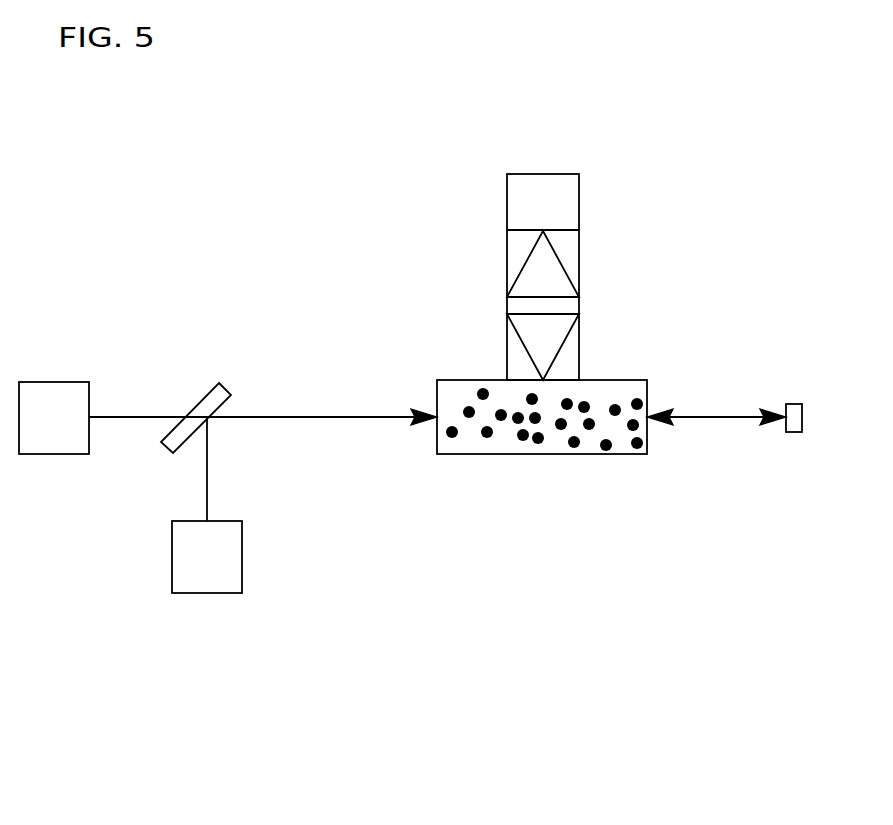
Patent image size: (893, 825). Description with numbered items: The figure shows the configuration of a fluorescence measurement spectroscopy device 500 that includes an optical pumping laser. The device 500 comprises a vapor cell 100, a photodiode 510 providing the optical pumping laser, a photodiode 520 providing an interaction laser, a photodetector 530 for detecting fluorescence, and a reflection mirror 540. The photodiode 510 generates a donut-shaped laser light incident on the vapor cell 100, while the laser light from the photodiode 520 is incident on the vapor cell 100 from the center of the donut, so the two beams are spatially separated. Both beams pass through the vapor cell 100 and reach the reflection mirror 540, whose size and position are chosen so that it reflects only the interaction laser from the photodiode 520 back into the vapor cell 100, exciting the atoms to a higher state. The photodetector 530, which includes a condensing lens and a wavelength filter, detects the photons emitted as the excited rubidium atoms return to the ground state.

The fluorescence measurement spectroscopy device 500 is at (308, 107).
The vapor cell 100 is at (543, 454).
The photodiode 510 is at (207, 593).
The photodiode 520 is at (54, 382).
The photodetector 530 is at (543, 174).
The reflection mirror 540 is at (794, 404).